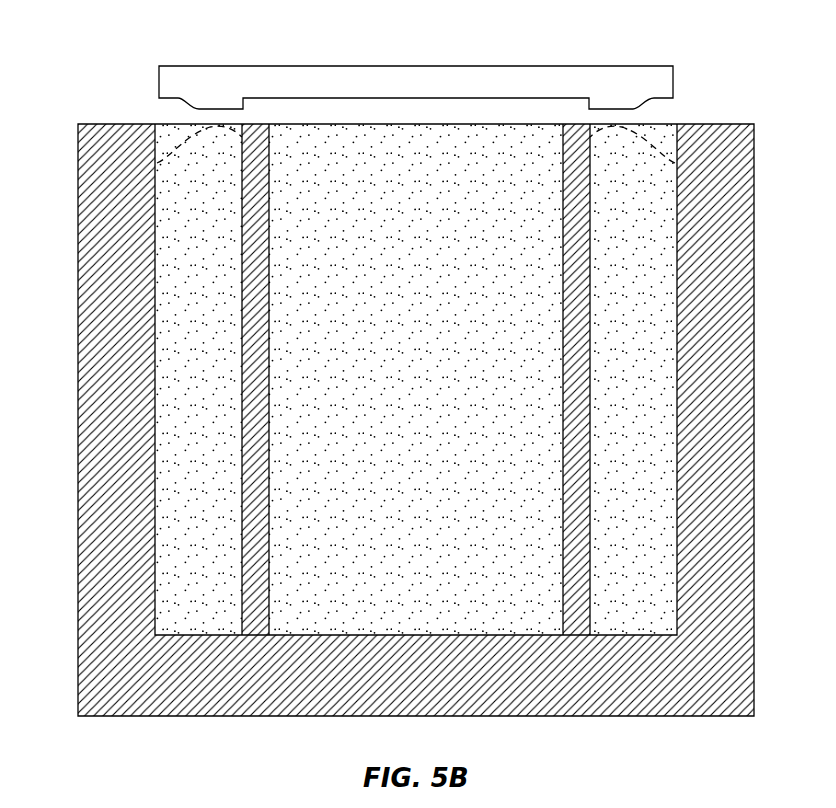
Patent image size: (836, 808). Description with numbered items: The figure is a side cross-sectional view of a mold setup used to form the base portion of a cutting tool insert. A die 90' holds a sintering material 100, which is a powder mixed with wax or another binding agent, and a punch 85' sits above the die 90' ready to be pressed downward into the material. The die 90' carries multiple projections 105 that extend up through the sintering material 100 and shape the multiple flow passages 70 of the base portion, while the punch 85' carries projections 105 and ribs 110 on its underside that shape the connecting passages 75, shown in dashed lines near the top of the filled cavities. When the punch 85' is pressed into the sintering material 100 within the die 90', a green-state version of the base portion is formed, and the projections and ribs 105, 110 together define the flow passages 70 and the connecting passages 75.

The flow passages 70 is at (242, 290).
The connecting passages 75 is at (157, 163).
The punch 85' is at (416, 62).
The die 90' is at (440, 420).
The sintering material 100 is at (517, 147).
The projections 105 is at (253, 509).
The ribs 110 is at (197, 108).